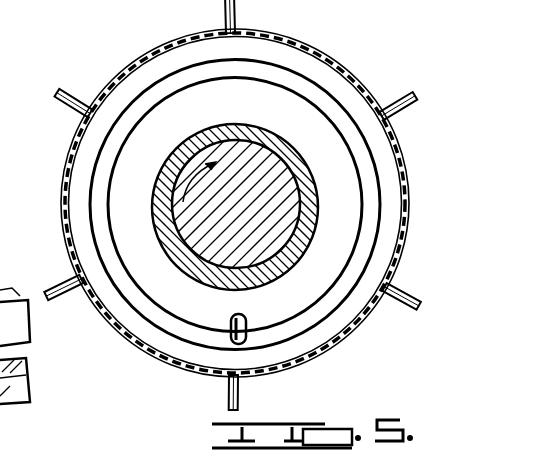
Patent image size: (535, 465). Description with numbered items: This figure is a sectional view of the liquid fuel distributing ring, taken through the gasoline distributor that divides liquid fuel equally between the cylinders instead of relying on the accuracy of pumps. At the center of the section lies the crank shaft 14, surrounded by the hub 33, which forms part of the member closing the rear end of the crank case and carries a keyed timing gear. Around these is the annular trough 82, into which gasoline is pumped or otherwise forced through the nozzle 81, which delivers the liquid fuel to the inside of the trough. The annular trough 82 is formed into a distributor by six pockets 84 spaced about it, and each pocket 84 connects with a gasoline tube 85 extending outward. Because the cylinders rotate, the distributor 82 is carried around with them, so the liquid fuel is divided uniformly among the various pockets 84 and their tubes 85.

The pockets 84 is at (207, 40).
The annular trough 82 is at (278, 52).
The gasoline tube 85 is at (63, 105).
The hub 33 is at (255, 135).
The crank shaft 14 is at (257, 213).
The nozzle 81 is at (248, 318).